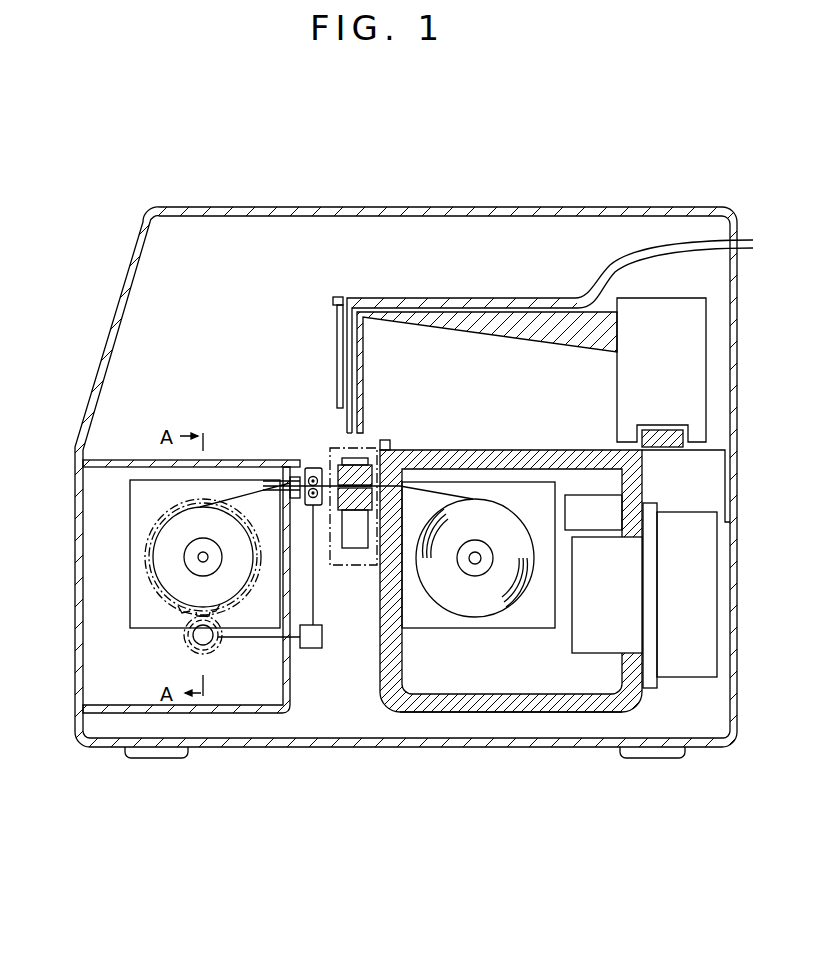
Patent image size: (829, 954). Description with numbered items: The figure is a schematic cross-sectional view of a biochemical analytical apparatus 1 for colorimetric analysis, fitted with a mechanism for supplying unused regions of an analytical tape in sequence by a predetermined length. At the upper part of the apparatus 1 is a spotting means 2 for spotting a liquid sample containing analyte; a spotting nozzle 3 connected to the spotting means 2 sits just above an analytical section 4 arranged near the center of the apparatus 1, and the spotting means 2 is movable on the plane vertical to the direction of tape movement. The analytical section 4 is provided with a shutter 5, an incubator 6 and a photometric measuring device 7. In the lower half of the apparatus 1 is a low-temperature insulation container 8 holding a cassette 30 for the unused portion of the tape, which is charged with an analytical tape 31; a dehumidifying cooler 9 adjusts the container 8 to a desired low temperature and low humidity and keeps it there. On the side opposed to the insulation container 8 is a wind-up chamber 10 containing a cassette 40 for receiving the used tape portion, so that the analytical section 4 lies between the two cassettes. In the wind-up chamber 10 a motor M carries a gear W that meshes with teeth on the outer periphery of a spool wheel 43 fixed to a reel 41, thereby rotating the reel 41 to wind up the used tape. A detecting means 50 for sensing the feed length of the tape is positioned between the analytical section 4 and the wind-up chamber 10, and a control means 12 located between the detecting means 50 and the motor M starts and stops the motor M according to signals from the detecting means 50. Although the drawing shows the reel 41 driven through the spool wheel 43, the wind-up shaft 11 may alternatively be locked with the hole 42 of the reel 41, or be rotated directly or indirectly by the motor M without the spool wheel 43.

The biochemical analytical apparatus 1 is at (607, 180).
The spotting means 2 is at (512, 298).
The spotting nozzle 3 is at (363, 367).
The analytical section 4 is at (341, 566).
The shutter 5 is at (352, 458).
The incubator 6 is at (345, 512).
The photometric measuring device 7 is at (358, 548).
The low-temperature insulation container 8 is at (500, 713).
The dehumidifying cooler 9 is at (682, 518).
The wind-up chamber 10 is at (95, 660).
The wind-up shaft 11 is at (203, 552).
The control means 12 is at (318, 648).
The cassette for unused portion of analytical tape 30 is at (490, 630).
The analytical tape 31 is at (457, 470).
The cassette for used portion of analytical tape 40 is at (130, 618).
The reel 41 is at (158, 558).
The hole 42 is at (187, 543).
The spool wheel 43 is at (150, 582).
The detecting means 50 is at (311, 468).
The gear W is at (188, 640).
The motor M is at (210, 645).